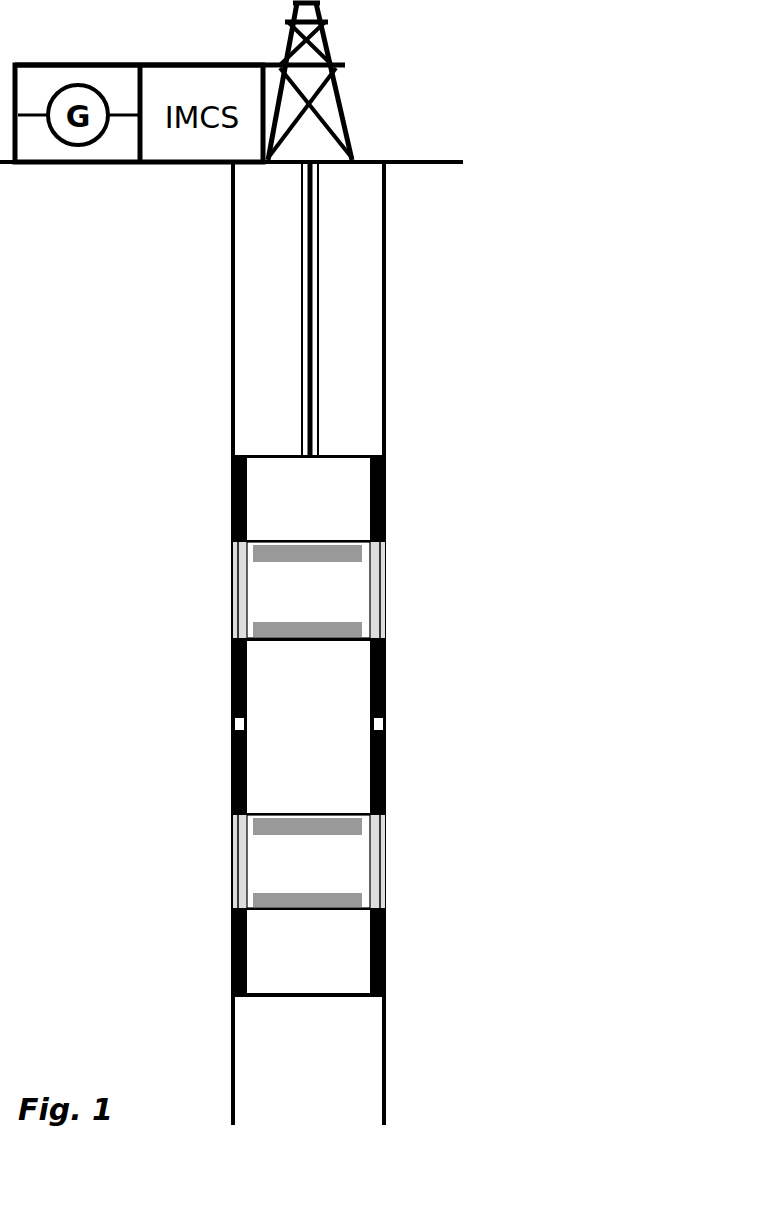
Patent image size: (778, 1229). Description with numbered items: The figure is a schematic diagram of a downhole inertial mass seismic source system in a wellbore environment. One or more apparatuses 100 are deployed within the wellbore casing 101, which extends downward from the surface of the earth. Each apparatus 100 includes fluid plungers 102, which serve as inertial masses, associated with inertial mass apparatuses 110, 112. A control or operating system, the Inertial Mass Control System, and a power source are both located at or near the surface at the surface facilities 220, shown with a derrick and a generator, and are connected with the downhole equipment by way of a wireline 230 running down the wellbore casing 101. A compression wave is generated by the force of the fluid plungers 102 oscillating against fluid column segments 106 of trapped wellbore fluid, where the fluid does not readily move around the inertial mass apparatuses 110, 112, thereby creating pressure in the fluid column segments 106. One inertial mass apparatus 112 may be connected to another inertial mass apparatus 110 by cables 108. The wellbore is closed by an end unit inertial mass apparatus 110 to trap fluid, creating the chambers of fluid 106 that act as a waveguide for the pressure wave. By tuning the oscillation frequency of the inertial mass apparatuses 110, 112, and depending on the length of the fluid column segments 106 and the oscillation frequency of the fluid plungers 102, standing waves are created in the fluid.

The apparatus 100 is at (333, 726).
The wellbore casing 101 is at (232, 326).
The fluid plunger 102 is at (305, 558).
The fluid column segment 106 is at (226, 743).
The cable 108 is at (270, 864).
The inertial mass apparatus 110 is at (309, 726).
The inertial mass apparatus 112 is at (309, 726).
The surface facilities 220 is at (345, 68).
The wireline 230 is at (315, 240).